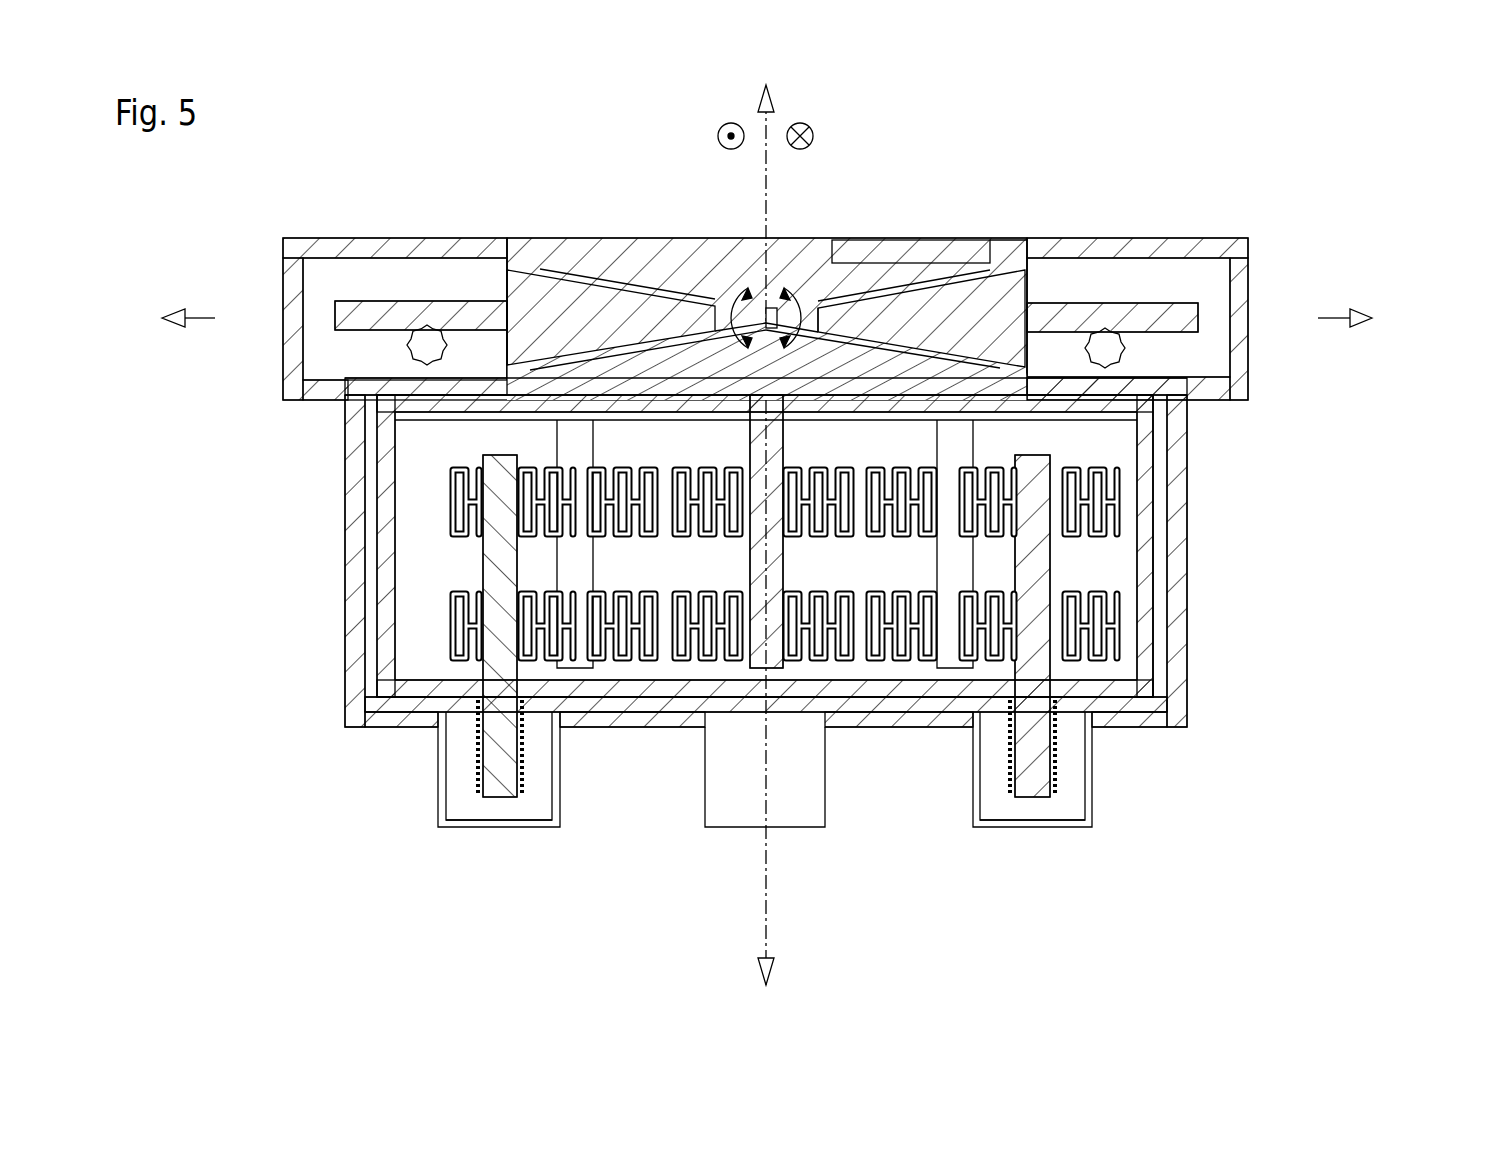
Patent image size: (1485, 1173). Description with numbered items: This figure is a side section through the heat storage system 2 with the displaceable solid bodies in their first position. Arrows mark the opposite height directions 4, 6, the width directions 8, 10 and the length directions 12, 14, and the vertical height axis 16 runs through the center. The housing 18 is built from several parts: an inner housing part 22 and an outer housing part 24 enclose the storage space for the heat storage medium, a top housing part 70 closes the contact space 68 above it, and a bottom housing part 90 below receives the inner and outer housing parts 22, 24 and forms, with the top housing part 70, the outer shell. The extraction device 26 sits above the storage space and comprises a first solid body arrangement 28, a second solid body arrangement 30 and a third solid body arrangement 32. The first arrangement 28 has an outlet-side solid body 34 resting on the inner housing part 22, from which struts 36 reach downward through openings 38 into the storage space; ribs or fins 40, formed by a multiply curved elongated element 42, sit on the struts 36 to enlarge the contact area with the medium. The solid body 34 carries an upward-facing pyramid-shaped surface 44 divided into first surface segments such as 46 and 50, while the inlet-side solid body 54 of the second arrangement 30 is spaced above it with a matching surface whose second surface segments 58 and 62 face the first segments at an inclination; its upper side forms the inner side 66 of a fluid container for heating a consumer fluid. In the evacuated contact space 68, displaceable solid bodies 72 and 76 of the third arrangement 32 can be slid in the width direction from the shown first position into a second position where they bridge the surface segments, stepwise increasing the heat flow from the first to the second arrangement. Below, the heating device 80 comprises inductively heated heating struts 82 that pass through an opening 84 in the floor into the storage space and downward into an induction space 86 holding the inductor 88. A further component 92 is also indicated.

The heat storage system 2 is at (822, 232).
The height direction 4 is at (770, 115).
The height direction 6 is at (768, 948).
The width direction 8 is at (200, 312).
The width direction 10 is at (1335, 312).
The length direction 12 is at (812, 125).
The length direction 14 is at (726, 124).
The height axis 16 is at (765, 222).
The housing 18 is at (1187, 478).
The inner housing part 22 is at (1145, 660).
The outer housing part 24 is at (1162, 631).
The extraction device 26 is at (1210, 278).
The first solid body arrangement 28 is at (786, 626).
The second solid body arrangement 30 is at (938, 164).
The third solid body arrangement 32 is at (775, 223).
The solid body 34 is at (615, 373).
The struts 36 is at (570, 557).
The openings 38 is at (670, 400).
The ribs/fins 40 is at (455, 487).
The element 42 is at (779, 597).
The surface 44 is at (780, 305).
The first surface segment 46 is at (830, 297).
The first surface segment 50 is at (655, 300).
The solid body 54 is at (915, 236).
The second surface segment 58 is at (885, 283).
The second surface segment 62 is at (670, 292).
The inner side 66 is at (853, 277).
The contact space 68 is at (1250, 290).
The top housing part 70 is at (1280, 262).
The displaceable solid body 72 is at (1035, 290).
The displaceable solid body 76 is at (540, 292).
The heating device 80 is at (760, 817).
The heating struts 82 is at (503, 760).
The opening 84 is at (525, 690).
The induction space 86 is at (541, 804).
The inductor 88 is at (478, 743).
The bottom housing part 90 is at (1178, 530).
The component 92 is at (1000, 280).